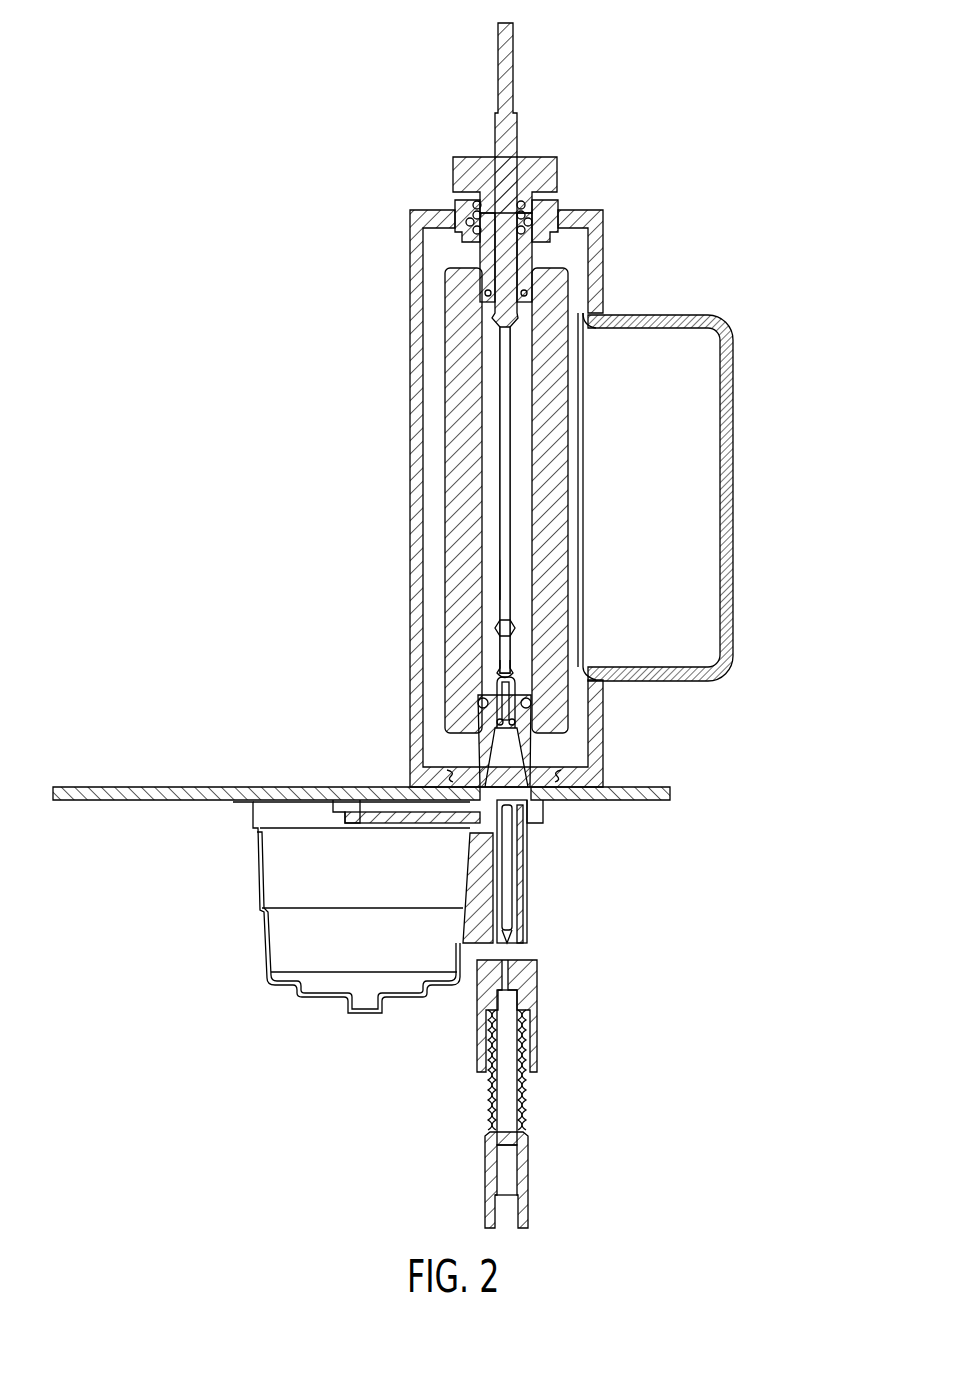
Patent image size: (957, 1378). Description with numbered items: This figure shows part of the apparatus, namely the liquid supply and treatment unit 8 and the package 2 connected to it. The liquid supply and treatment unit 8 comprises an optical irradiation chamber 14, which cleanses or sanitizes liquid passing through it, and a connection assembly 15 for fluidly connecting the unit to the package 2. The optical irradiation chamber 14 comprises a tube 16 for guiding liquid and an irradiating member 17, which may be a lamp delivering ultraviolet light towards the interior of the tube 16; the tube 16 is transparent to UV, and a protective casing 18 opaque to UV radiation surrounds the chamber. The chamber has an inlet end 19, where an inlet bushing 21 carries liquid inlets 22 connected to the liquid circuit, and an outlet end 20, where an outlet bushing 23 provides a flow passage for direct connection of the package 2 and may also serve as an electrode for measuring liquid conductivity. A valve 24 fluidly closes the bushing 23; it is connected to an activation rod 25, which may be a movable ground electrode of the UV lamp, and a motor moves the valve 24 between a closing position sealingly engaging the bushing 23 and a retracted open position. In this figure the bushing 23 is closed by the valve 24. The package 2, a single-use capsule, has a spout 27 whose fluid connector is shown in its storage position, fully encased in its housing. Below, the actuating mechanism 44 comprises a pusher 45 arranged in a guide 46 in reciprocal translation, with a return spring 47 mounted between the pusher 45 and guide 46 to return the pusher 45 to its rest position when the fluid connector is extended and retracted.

The package 2 is at (210, 802).
The liquid supply and treatment unit 8 is at (790, 21).
The optical irradiation chamber 14 is at (523, 405).
The connection assembly 15 is at (650, 769).
The tube 16 is at (492, 476).
The irradiating member 17 is at (458, 628).
The protective casing 18 is at (416, 396).
The inlet end 19 is at (522, 305).
The outlet end 20 is at (483, 700).
The inlet bushing 21 is at (480, 252).
The liquid inlet 22 is at (545, 200).
The outlet bushing 23 is at (533, 748).
The valve 24 is at (495, 715).
The activation rod 25 is at (500, 565).
The spout 27 is at (578, 802).
The actuating mechanism 44 is at (527, 1096).
The pusher 45 is at (487, 1170).
The guide 46 is at (480, 1036).
The return spring 47 is at (490, 1108).